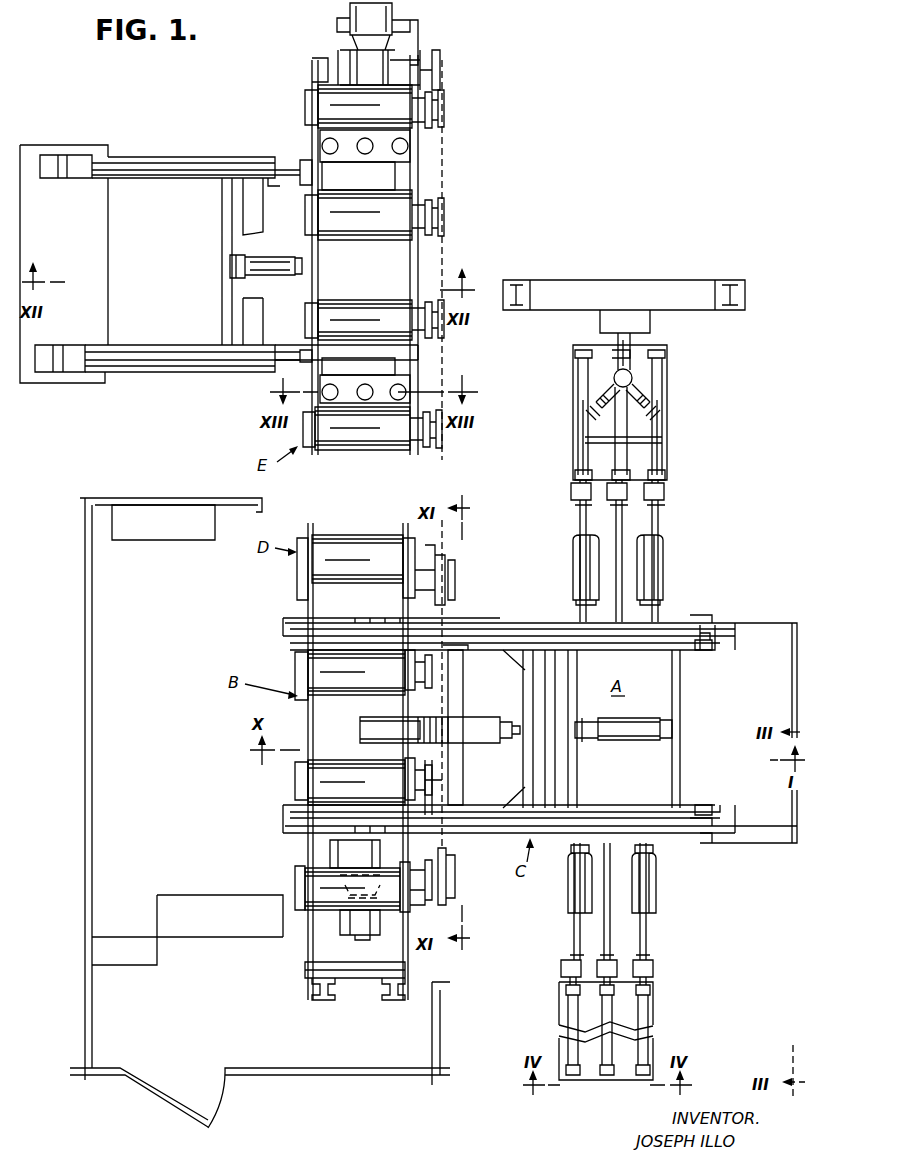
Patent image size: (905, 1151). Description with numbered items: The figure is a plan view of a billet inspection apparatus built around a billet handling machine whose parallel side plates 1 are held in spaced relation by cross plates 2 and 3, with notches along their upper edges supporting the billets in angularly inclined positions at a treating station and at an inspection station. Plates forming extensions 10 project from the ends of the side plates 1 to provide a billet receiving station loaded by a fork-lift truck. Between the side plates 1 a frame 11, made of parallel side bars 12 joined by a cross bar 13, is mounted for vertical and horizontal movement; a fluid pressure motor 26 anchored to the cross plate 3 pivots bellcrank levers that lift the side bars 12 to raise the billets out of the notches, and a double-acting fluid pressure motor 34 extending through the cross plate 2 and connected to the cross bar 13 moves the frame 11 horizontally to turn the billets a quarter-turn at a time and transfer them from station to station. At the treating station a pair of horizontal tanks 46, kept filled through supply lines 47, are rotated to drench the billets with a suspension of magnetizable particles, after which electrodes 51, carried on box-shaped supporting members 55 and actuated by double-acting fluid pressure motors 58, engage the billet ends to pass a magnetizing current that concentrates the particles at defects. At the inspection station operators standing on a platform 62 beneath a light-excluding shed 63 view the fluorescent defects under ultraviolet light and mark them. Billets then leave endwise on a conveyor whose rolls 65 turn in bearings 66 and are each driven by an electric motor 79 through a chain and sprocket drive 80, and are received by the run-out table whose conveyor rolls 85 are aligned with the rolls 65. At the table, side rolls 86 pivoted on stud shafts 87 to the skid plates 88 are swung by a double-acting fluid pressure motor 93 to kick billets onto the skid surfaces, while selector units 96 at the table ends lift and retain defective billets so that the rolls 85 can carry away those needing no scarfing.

The side plates 1 is at (520, 622).
The cross plate 2 is at (463, 758).
The cross plate 3 is at (682, 712).
The extensions 10 is at (765, 622).
The frame 11 is at (552, 804).
The side bars 12 is at (693, 652).
The cross bar 13 is at (520, 688).
The fluid pressure motor 26 is at (618, 742).
The double-acting fluid pressure motor 34 is at (390, 728).
The tanks 46 is at (575, 556).
The supply lines 47 is at (590, 410).
The electrodes 51 is at (571, 492).
The box-shaped supporting members 55 is at (650, 518).
The double-acting fluid pressure motors 58 is at (655, 443).
The platform 62 is at (185, 768).
The shed 63 is at (92, 697).
The conveyor rolls 65 is at (348, 536).
The bearings 66 is at (413, 554).
The electric motor 79 is at (342, 915).
The chain and sprocket drive 80 is at (442, 780).
The conveyor rolls 85 is at (318, 106).
The side rolls 86 is at (355, 188).
The stud shafts 87 is at (305, 162).
The skid plates 88 is at (176, 178).
The double-acting fluid pressure motor 93 is at (273, 256).
The selector units 96 is at (395, 135).